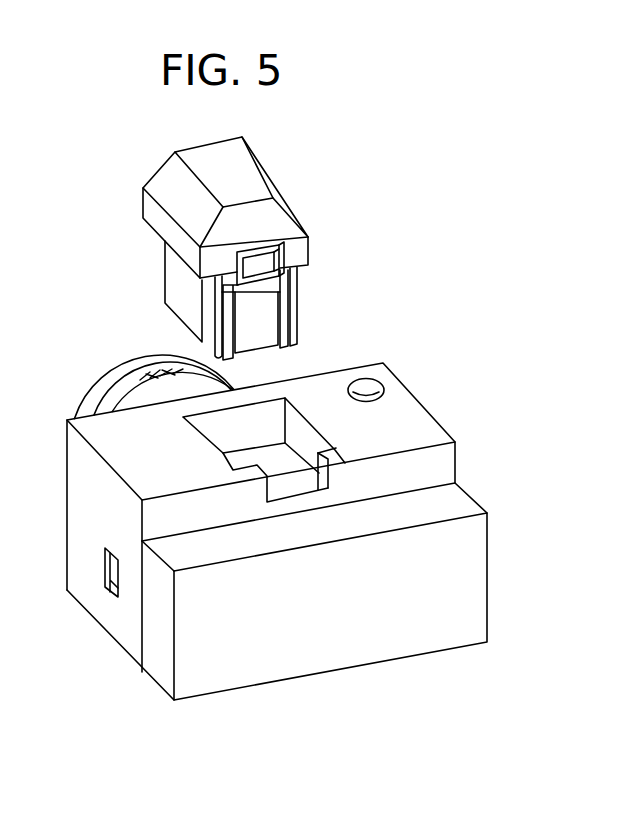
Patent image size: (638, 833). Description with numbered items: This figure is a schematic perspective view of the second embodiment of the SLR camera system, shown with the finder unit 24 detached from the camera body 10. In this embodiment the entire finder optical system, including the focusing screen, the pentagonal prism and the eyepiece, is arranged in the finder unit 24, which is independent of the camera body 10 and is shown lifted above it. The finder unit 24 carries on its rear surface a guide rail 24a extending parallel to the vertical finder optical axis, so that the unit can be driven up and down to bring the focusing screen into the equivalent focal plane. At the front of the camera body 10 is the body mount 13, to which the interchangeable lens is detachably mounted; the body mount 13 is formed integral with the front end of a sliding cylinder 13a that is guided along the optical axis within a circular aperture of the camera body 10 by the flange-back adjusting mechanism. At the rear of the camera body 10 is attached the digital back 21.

The camera body 10 is at (423, 420).
The digital back 21 is at (473, 563).
The body mount 13 is at (131, 372).
The sliding cylinder 13a is at (132, 405).
The finder unit 24 is at (243, 172).
The guide rail 24a is at (286, 310).